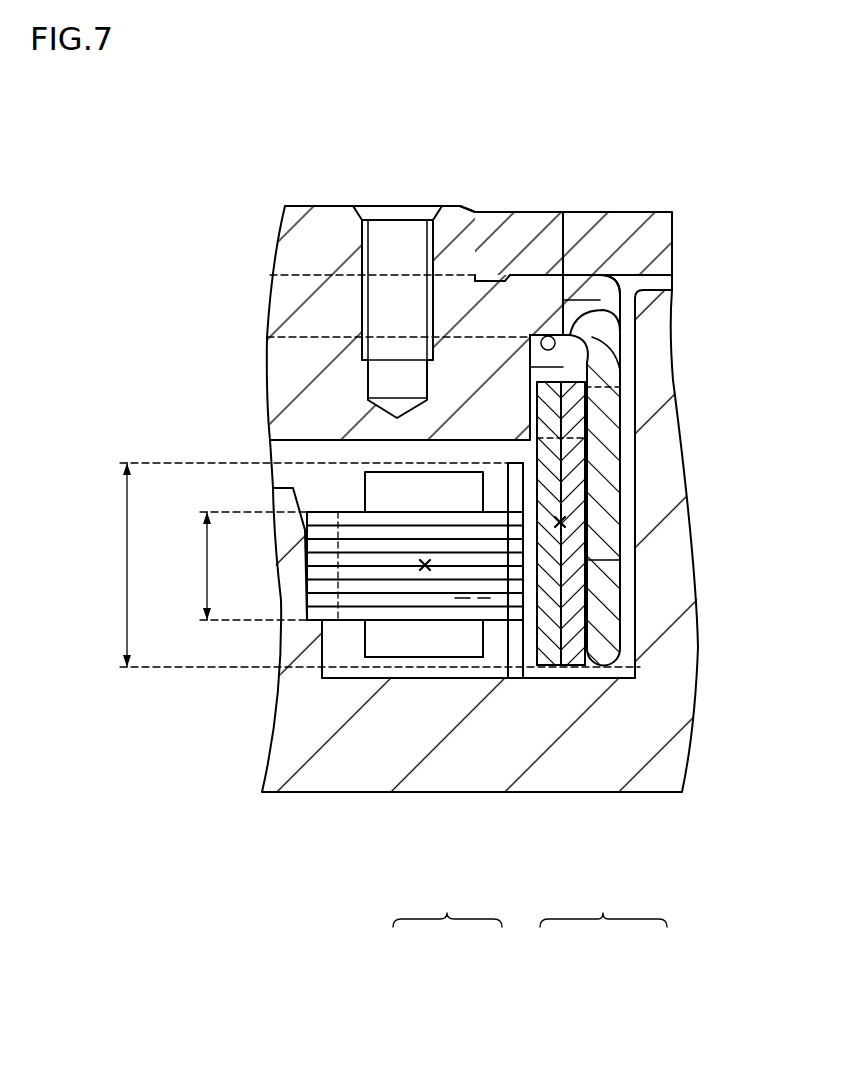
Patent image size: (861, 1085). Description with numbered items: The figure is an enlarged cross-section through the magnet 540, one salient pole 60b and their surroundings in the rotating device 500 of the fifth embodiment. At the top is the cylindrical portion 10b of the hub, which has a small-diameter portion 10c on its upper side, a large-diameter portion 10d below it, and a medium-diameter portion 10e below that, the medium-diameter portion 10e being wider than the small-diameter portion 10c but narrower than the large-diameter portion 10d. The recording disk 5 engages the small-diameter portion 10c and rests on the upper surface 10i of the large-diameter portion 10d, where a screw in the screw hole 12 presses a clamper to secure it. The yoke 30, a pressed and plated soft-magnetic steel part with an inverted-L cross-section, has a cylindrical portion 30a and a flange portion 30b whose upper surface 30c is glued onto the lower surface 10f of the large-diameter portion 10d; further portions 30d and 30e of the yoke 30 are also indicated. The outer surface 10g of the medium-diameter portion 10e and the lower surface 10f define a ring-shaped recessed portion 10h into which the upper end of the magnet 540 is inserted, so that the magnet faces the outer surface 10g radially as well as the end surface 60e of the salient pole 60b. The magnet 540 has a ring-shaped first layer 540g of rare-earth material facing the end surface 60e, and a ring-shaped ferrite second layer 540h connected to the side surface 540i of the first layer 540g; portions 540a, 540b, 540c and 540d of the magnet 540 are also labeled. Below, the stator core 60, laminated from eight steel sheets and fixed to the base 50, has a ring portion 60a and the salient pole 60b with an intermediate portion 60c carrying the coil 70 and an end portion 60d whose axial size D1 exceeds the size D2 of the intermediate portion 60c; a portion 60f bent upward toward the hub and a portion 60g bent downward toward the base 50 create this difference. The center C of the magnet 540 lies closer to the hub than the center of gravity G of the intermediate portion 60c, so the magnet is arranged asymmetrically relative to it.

The rotating device 500 is at (438, 559).
The recording disk 5 is at (638, 230).
The cylindrical portion 10b is at (335, 295).
The small-diameter portion 10c is at (455, 250).
The large-diameter portion 10d is at (540, 293).
The medium-diameter portion 10e is at (480, 360).
The lower surface of the large-diameter portion 10f is at (565, 283).
The outer surface of the medium-diameter portion 10g is at (548, 372).
The ring-shaped recessed portion 10h is at (585, 395).
The upper surface of the large-diameter portion 10i is at (543, 300).
The screw hole 12 is at (423, 248).
The yoke 30 is at (662, 470).
The cylindrical portion of the yoke 30a is at (612, 458).
The flange portion 30b is at (585, 348).
The upper surface of the flange portion 30c is at (605, 308).
The seal projection 30d is at (558, 352).
The seal side portion 30e is at (575, 545).
The base 50 is at (660, 775).
The stator core 60 is at (541, 710).
The ring portion 60a is at (327, 600).
The salient pole 60b is at (414, 734).
The intermediate portion 60c is at (460, 600).
The end portion 60d is at (478, 600).
The end surface of the salient pole 60e is at (515, 650).
The portion protruding toward the hub 60f is at (517, 480).
The portion protruding toward the base 60g is at (530, 603).
The coil 70 is at (385, 640).
The magnet 540 is at (664, 663).
The bearing upper end 540a is at (545, 381).
The bearing portion 540b is at (533, 577).
The bearing portion 540c is at (577, 436).
The bearing portion 540d is at (583, 450).
The first layer 540g is at (550, 643).
The second layer 540h is at (575, 643).
The side surface of the first layer 540i is at (603, 643).
The center of the magnet C is at (566, 522).
The center of gravity of the intermediate portion G is at (425, 575).
The size of the end portion D1 is at (127, 527).
The size of the intermediate portion D2 is at (205, 555).